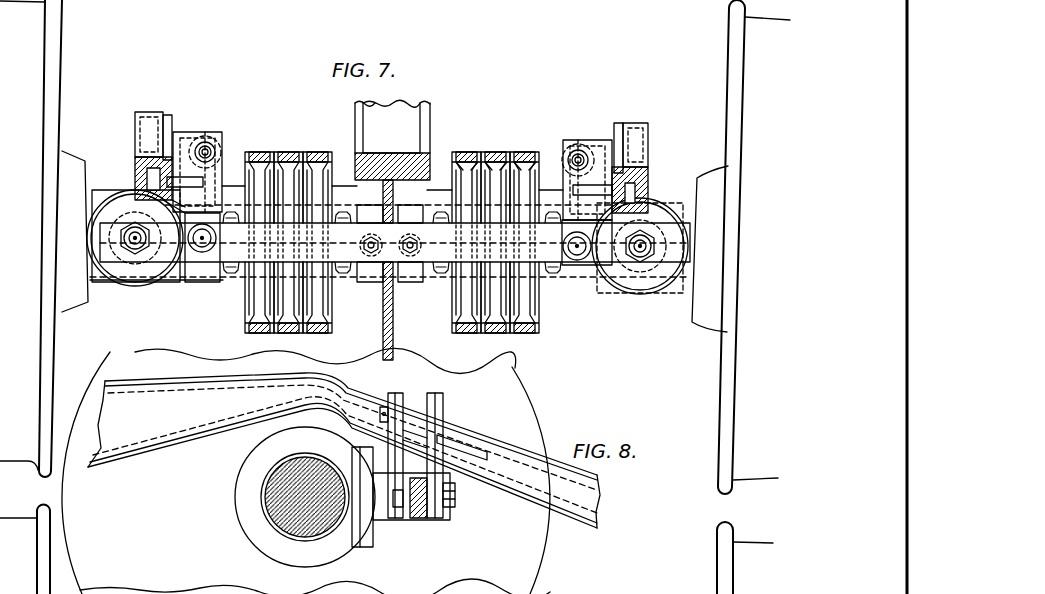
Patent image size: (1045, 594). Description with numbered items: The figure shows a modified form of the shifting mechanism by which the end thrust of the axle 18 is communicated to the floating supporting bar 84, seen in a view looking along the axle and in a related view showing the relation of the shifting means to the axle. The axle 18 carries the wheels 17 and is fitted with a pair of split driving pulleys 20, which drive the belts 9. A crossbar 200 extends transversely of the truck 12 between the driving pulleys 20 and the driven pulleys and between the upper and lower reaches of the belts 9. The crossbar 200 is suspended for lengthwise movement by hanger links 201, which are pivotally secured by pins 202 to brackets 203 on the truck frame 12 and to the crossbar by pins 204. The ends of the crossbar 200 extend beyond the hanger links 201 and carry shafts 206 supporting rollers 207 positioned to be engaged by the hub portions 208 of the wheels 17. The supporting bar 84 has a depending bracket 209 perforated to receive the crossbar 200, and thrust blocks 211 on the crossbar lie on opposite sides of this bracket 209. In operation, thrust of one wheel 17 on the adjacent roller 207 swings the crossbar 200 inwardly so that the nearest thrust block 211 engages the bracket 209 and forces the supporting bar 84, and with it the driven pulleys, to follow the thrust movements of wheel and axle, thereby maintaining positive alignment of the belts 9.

In FIG. 7, the belts 9 is at (523, 153).
In FIG. 7, the truck 12 is at (133, 128).
In FIG. 8, the truck 12 is at (132, 425).
In FIG. 7, the wheels 17 is at (63, 30).
In FIG. 8, the wheels 17 is at (717, 580).
In FIG. 8, the axle 18 is at (265, 495).
In FIG. 7, the pulleys 20 is at (290, 175).
In FIG. 7, the floating supporting bar 84 is at (413, 123).
In FIG. 7, the crossbar 200 is at (362, 283).
In FIG. 8, the crossbar 200 is at (438, 532).
In FIG. 7, the hanger links 201 is at (190, 250).
In FIG. 8, the hanger links 201 is at (432, 448).
In FIG. 7, the pins 202 is at (205, 148).
In FIG. 8, the pins 202 is at (445, 415).
In FIG. 7, the brackets 203 is at (602, 150).
In FIG. 8, the brackets 203 is at (440, 393).
In FIG. 7, the pins 204 is at (202, 255).
In FIG. 8, the pins 204 is at (432, 518).
In FIG. 8, the shafts 206 is at (457, 500).
In FIG. 7, the rollers 207 is at (147, 288).
In FIG. 8, the rollers 207 is at (363, 547).
In FIG. 7, the hub portions 208 is at (88, 195).
In FIG. 8, the hub portions 208 is at (265, 537).
In FIG. 7, the depending bracket 209 is at (396, 298).
In FIG. 7, the thrust blocks 211 is at (348, 197).